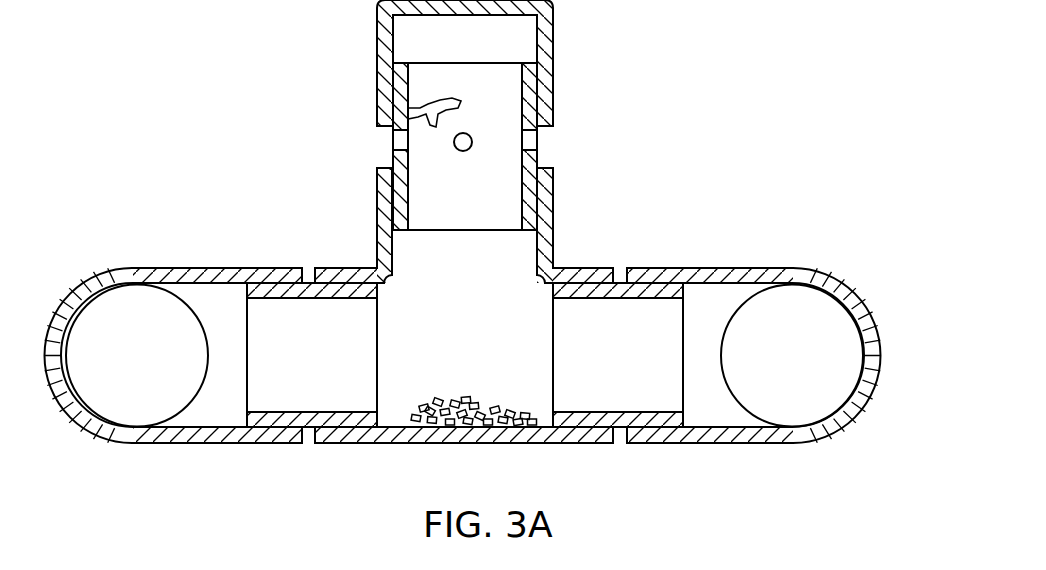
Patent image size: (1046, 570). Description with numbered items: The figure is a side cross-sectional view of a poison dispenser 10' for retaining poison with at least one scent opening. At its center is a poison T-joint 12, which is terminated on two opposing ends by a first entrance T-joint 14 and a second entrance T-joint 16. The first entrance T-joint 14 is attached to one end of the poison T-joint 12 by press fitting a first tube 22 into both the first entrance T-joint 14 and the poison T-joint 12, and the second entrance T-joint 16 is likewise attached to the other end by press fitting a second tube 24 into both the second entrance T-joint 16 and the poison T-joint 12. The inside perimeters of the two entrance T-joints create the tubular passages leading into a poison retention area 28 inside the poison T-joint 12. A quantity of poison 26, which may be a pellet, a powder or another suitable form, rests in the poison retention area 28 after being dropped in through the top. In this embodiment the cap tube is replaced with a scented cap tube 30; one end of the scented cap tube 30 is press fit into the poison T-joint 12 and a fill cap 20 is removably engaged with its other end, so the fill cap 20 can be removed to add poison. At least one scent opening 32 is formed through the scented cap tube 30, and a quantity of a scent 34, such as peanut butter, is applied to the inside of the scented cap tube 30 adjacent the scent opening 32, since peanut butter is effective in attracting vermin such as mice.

The poison dispenser 10' is at (462, 246).
The poison T-joint 12 is at (535, 443).
The first entrance T-joint 14 is at (204, 443).
The second entrance T-joint 16 is at (725, 443).
The fill cap 20 is at (556, 27).
The first tube 22 is at (307, 420).
The second tube 24 is at (622, 425).
The quantity of poison 26 is at (463, 398).
The poison retention area 28 is at (395, 413).
The scented cap tube 30 is at (541, 160).
The scent opening 32 is at (400, 143).
The quantity of scent 34 is at (427, 127).